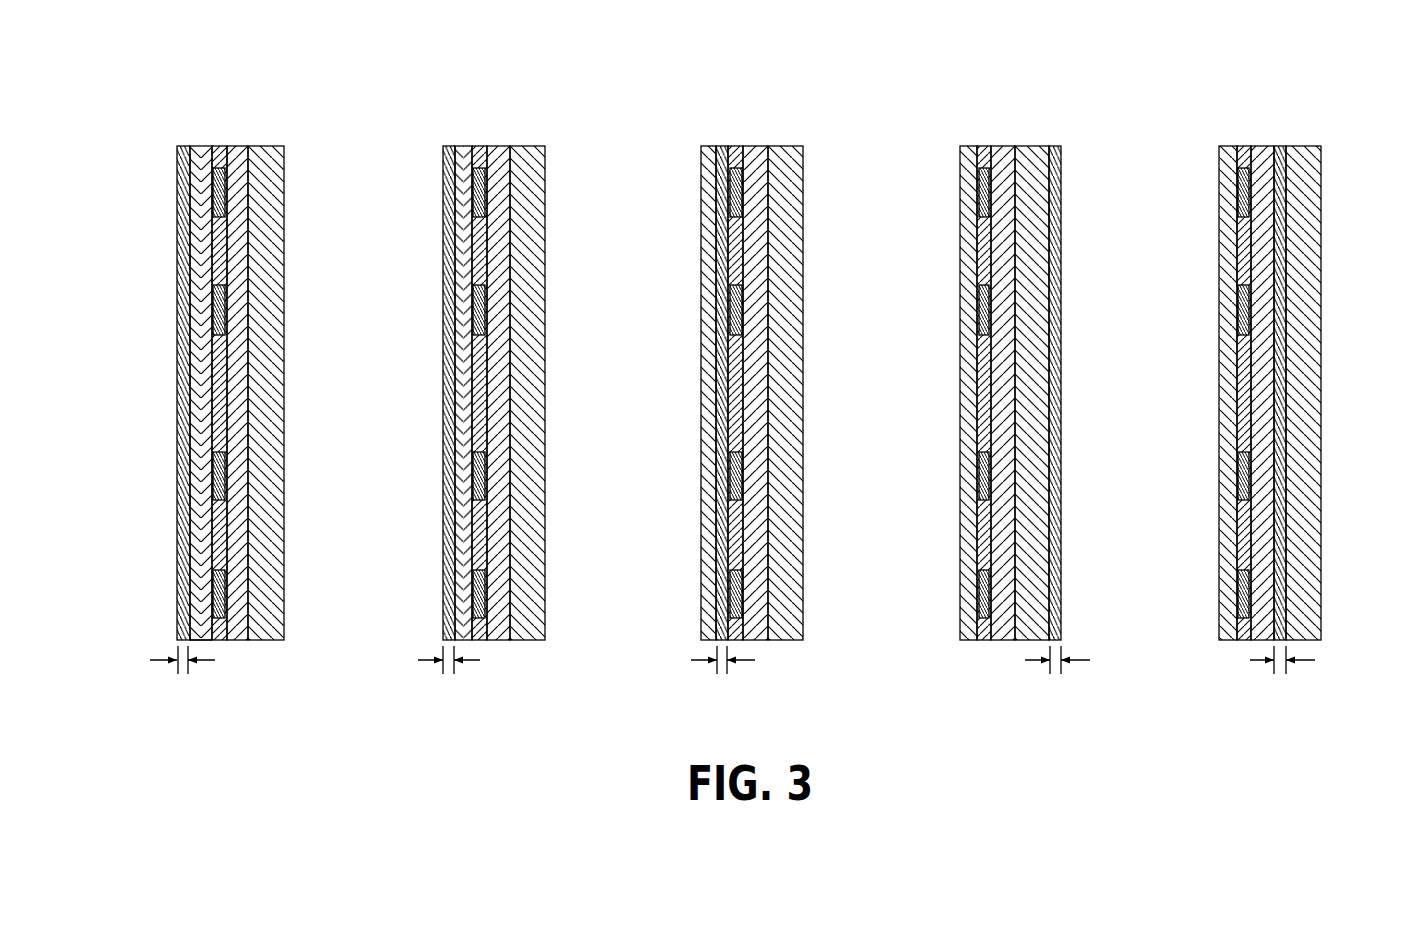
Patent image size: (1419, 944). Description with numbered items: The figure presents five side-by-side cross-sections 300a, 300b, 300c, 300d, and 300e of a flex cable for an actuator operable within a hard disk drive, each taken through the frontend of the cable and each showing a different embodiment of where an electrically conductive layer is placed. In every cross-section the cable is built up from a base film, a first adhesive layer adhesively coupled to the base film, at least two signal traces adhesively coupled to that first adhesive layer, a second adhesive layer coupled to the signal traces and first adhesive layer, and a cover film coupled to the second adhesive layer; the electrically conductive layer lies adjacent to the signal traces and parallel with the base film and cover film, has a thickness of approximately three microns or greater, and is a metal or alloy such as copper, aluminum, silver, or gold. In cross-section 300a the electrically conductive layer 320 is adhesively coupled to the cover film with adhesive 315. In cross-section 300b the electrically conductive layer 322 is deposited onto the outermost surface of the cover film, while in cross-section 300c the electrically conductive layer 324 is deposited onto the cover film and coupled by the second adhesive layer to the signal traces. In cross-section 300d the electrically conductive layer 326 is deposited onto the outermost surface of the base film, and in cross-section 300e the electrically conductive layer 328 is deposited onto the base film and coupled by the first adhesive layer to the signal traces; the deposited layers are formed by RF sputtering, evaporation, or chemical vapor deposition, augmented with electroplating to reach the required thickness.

The cross-section 300a is at (212, 75).
The cross-section 300b is at (478, 75).
The cross-section 300c is at (736, 75).
The cross-section 300d is at (995, 75).
The cross-section 300e is at (1255, 75).
The adhesive 315 is at (192, 640).
The electrically conductive layer 320 is at (177, 520).
The electrically conductive layer 322 is at (443, 520).
The electrically conductive layer 324 is at (718, 522).
The electrically conductive layer 326 is at (1062, 481).
The electrically conductive layer 328 is at (1282, 490).